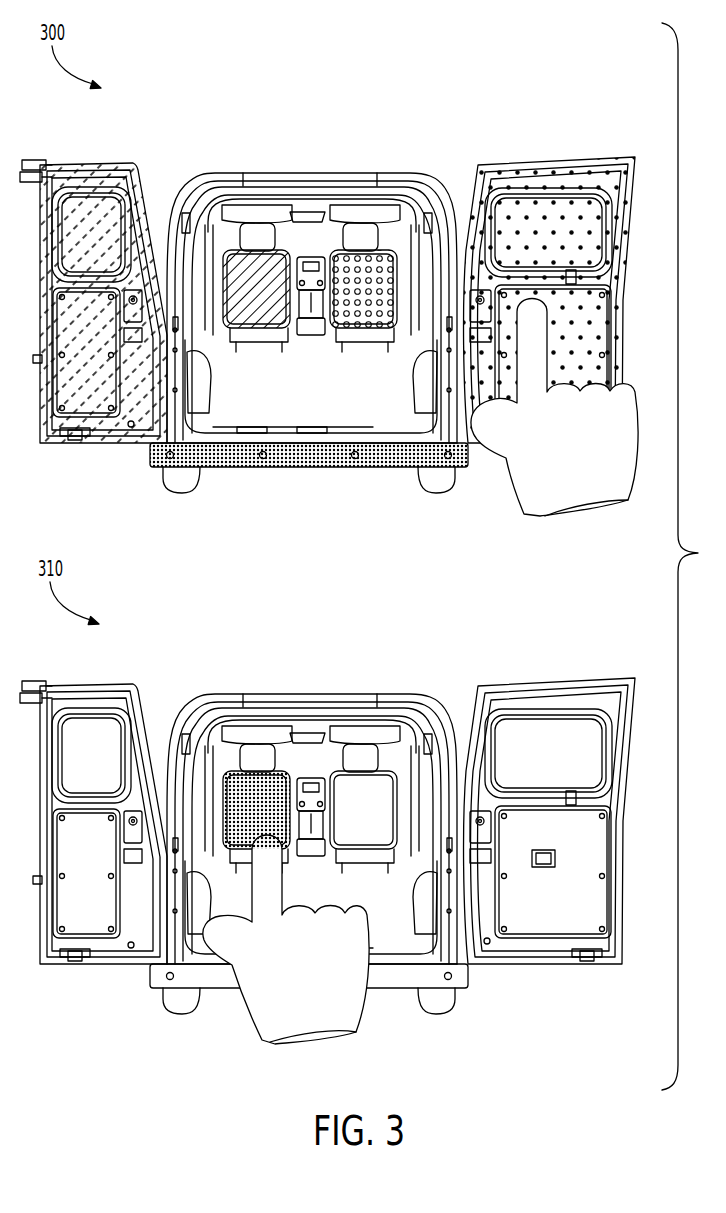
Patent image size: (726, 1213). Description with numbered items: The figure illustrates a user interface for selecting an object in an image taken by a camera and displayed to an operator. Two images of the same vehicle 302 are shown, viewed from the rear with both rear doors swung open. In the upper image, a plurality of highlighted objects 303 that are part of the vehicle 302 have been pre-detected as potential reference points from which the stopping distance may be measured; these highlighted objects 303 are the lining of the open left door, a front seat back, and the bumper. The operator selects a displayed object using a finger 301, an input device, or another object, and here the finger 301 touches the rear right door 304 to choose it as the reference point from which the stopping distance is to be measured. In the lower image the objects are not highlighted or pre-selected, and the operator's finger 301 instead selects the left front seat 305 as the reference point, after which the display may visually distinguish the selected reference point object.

The finger 301 is at (558, 500).
The vehicle 302 is at (350, 172).
The highlighted objects 303 is at (330, 355).
The rear right door 304 is at (597, 165).
The left front seat 305 is at (257, 785).